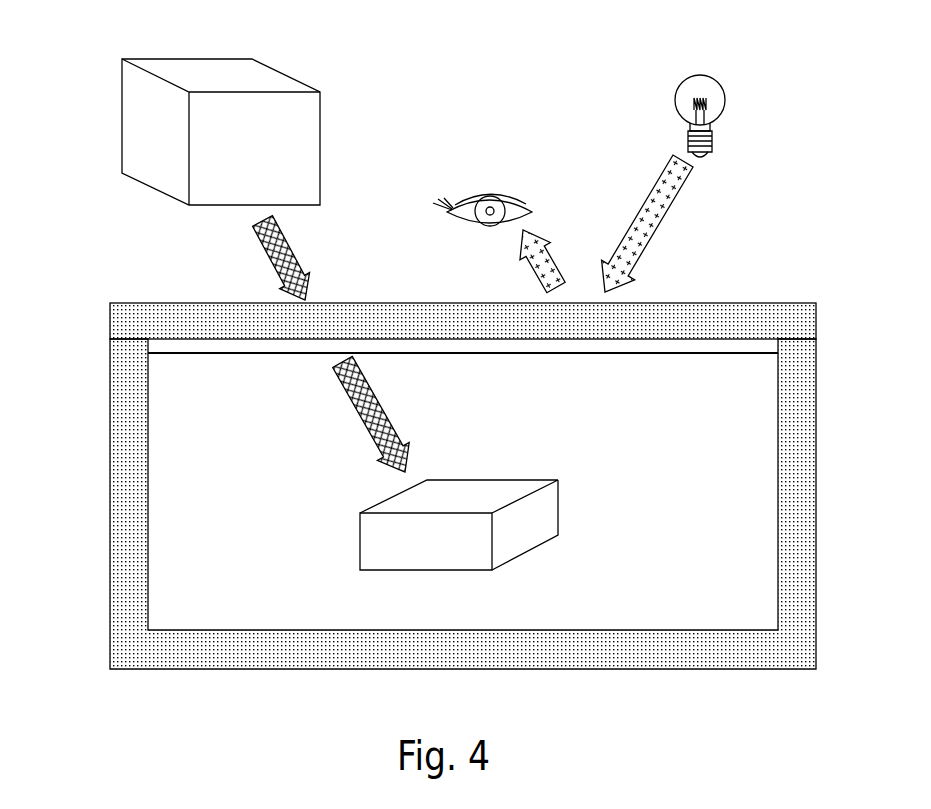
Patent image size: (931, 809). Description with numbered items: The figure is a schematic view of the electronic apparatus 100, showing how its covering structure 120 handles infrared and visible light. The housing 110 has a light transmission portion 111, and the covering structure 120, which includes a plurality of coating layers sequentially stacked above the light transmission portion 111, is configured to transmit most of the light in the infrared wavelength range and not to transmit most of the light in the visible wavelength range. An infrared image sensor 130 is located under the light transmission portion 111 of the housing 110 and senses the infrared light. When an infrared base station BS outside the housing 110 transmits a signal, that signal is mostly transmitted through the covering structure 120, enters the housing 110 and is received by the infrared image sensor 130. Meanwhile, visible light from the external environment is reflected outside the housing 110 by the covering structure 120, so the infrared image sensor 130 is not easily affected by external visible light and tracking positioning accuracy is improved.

The infrared base station BS is at (207, 75).
The electronic apparatus 100 is at (188, 258).
The housing 110 is at (110, 492).
The light transmission portion 111 is at (171, 348).
The covering structure 120 is at (110, 322).
The infrared image sensor 130 is at (430, 558).